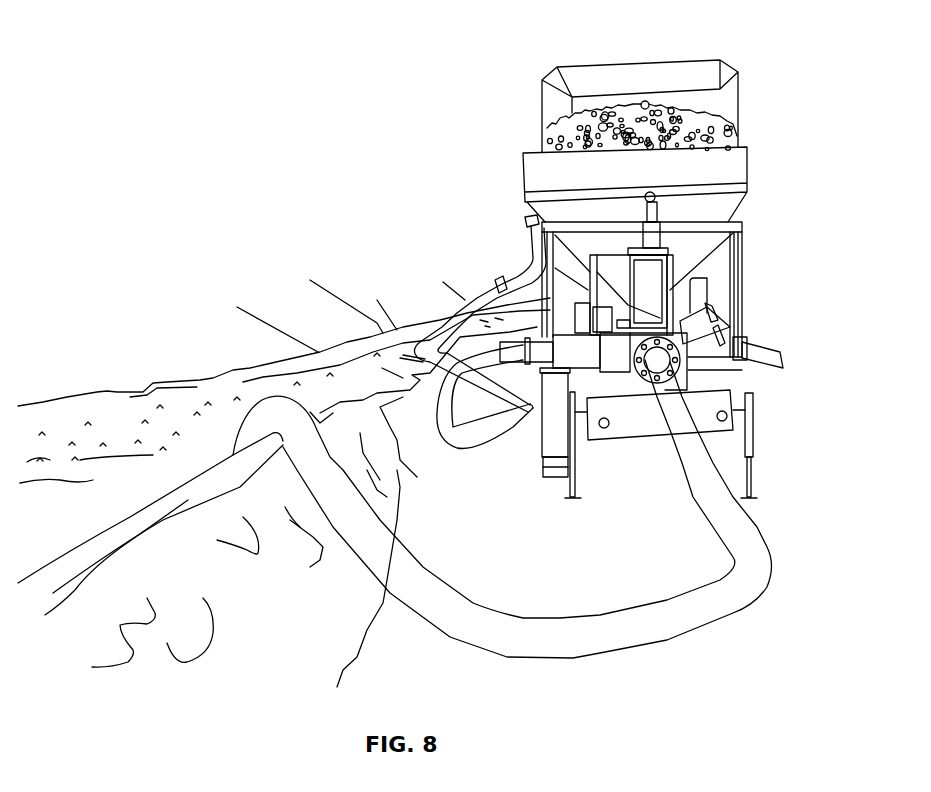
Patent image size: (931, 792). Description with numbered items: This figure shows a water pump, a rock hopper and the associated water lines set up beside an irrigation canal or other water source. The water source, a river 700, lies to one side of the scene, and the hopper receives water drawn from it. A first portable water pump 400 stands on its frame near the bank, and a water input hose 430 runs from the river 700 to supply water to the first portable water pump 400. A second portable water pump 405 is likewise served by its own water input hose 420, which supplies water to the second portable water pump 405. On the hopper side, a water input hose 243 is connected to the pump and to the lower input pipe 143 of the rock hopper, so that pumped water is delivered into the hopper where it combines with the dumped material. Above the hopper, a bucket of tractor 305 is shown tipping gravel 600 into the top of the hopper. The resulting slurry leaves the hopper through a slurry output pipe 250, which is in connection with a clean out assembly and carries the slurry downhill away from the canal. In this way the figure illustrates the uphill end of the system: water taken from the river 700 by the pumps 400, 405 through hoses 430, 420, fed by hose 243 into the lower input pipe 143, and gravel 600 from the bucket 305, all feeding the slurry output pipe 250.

The bucket of tractor 305 is at (632, 62).
The gravel 600 is at (543, 133).
The lower input pipe 143 is at (518, 272).
The slurry output pipe 250 is at (757, 348).
The water input hose 243 is at (477, 443).
The second portable water pump 405 is at (648, 427).
The first portable water pump 400 is at (648, 355).
The river 700 is at (155, 484).
The water input hose 420 is at (395, 546).
The water input hose 430 is at (628, 642).